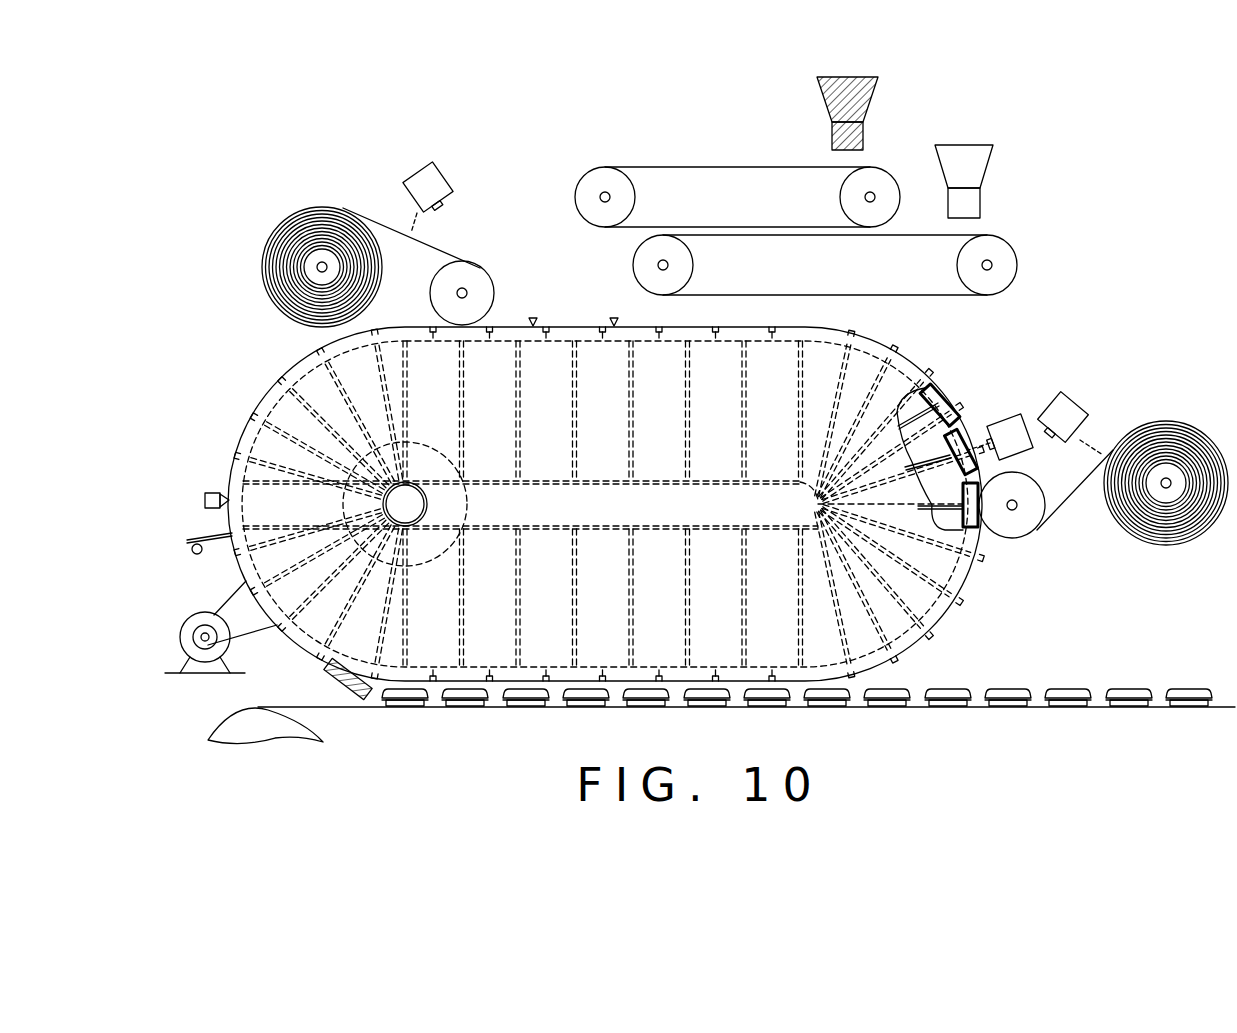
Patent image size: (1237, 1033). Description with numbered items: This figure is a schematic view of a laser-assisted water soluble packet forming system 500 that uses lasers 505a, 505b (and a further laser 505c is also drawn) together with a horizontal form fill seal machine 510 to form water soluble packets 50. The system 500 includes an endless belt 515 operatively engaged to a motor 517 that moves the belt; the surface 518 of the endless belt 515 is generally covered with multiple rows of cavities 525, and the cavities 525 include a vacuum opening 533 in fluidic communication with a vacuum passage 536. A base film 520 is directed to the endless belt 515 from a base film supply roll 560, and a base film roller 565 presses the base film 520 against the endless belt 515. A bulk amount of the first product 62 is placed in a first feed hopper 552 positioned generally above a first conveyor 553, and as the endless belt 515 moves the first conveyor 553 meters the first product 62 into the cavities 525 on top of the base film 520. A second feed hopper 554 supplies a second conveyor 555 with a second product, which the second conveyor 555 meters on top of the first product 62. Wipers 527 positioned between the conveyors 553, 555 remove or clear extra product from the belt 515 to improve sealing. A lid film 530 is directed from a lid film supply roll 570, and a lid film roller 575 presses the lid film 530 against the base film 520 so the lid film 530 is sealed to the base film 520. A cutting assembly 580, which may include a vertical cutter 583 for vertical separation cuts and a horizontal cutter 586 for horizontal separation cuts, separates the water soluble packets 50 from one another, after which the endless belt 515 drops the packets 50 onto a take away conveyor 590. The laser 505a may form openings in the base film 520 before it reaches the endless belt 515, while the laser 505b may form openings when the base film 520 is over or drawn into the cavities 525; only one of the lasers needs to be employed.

The laser-assisted water soluble packet forming system 500 is at (1073, 166).
The horizontal form fill seal machine 510 is at (1043, 283).
The endless belt 515 is at (785, 325).
The surface 518 is at (834, 330).
The base film 520 is at (1070, 500).
The cavities 525 is at (728, 326).
The wipers 527 is at (612, 317).
The lid film 530 is at (433, 245).
The vacuum opening 533 is at (905, 372).
The vacuum passage 536 is at (935, 394).
The first feed hopper 552 is at (990, 170).
The first conveyor 553 is at (943, 235).
The second feed hopper 554 is at (875, 106).
The second conveyor 555 is at (735, 165).
The base film supply roll 560 is at (1205, 425).
The base film roller 565 is at (1022, 528).
The lid film supply roll 570 is at (287, 233).
The lid film roller 575 is at (467, 288).
The cutting assembly 580 is at (166, 446).
The vertical cutter 583 is at (205, 497).
The horizontal cutter 586 is at (194, 534).
The motor 517 is at (185, 647).
The laser 505a is at (1073, 402).
The laser 505b is at (1016, 418).
The nozzle 505c is at (435, 162).
The first product 62 is at (957, 128).
The water soluble packets 50 is at (897, 688).
The take away conveyor 590 is at (920, 709).